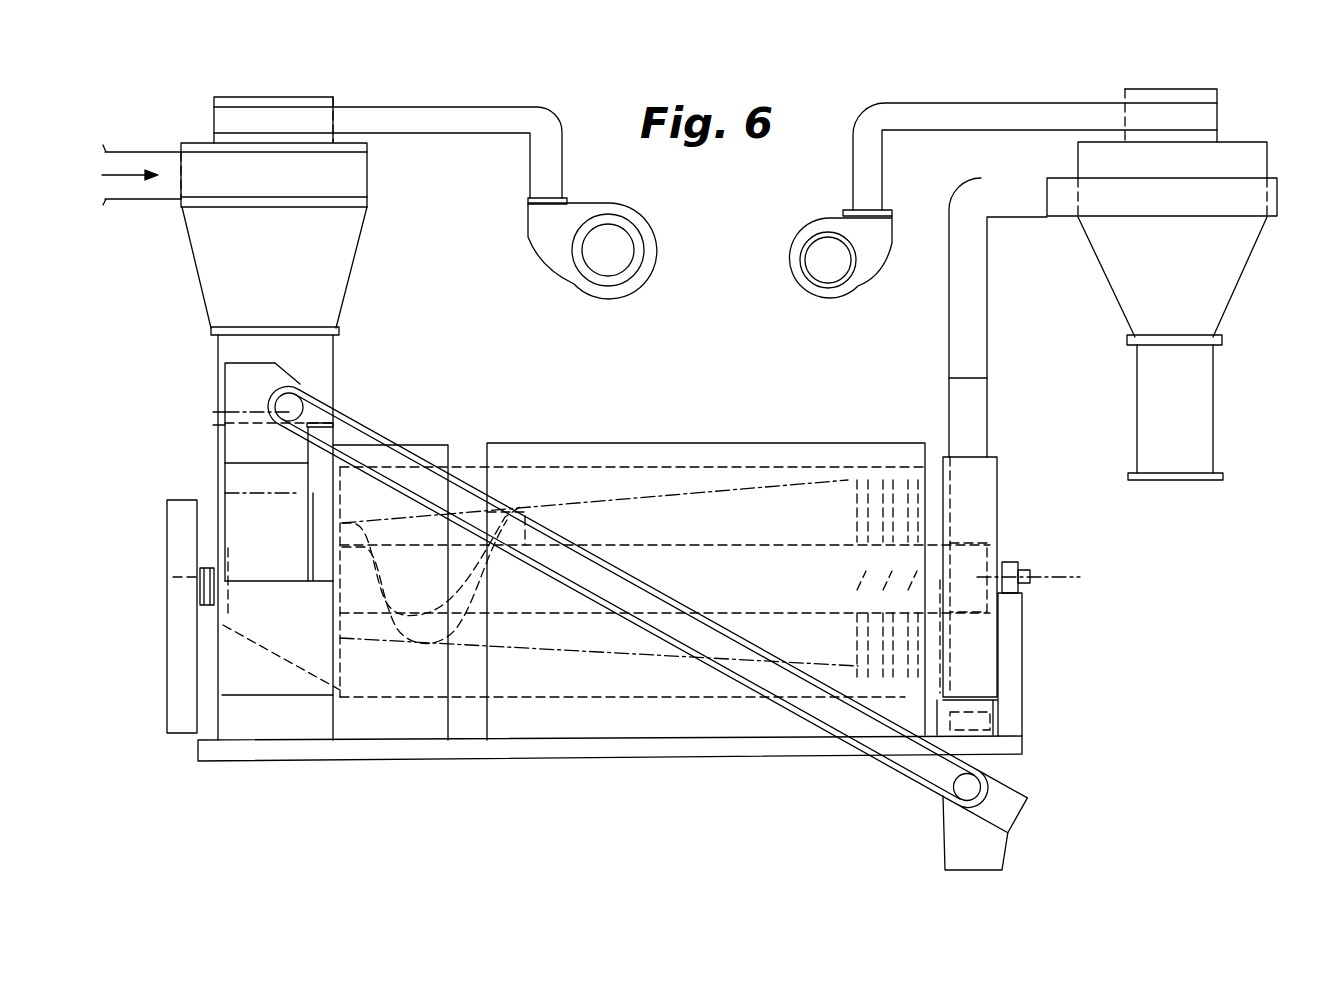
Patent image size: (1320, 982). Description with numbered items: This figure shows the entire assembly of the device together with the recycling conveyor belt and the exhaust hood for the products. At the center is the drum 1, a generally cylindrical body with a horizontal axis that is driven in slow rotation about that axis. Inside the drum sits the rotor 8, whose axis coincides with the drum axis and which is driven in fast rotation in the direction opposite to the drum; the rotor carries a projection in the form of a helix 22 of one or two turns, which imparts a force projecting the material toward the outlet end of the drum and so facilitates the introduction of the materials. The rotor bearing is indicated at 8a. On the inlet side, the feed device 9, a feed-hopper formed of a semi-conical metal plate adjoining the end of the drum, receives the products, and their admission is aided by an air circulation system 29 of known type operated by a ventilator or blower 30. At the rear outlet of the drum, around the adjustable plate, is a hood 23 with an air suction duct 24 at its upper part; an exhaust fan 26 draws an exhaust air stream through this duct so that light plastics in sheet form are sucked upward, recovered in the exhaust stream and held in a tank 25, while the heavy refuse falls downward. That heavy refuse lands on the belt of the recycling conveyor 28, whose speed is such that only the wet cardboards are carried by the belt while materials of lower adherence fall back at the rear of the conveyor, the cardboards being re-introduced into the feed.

The drum 1 is at (793, 441).
The rotor 8 is at (970, 553).
The adjusting bolt 8a is at (1063, 577).
The feed device 9 is at (258, 648).
The helix 22 is at (423, 635).
The hood 23 is at (983, 480).
The air suction duct 24 is at (957, 402).
The tank 25 is at (1215, 308).
The exhaust fan 26 is at (812, 233).
The recycling conveyor 28 is at (888, 765).
The air circulation system 29 is at (203, 256).
The blower 30 is at (605, 232).